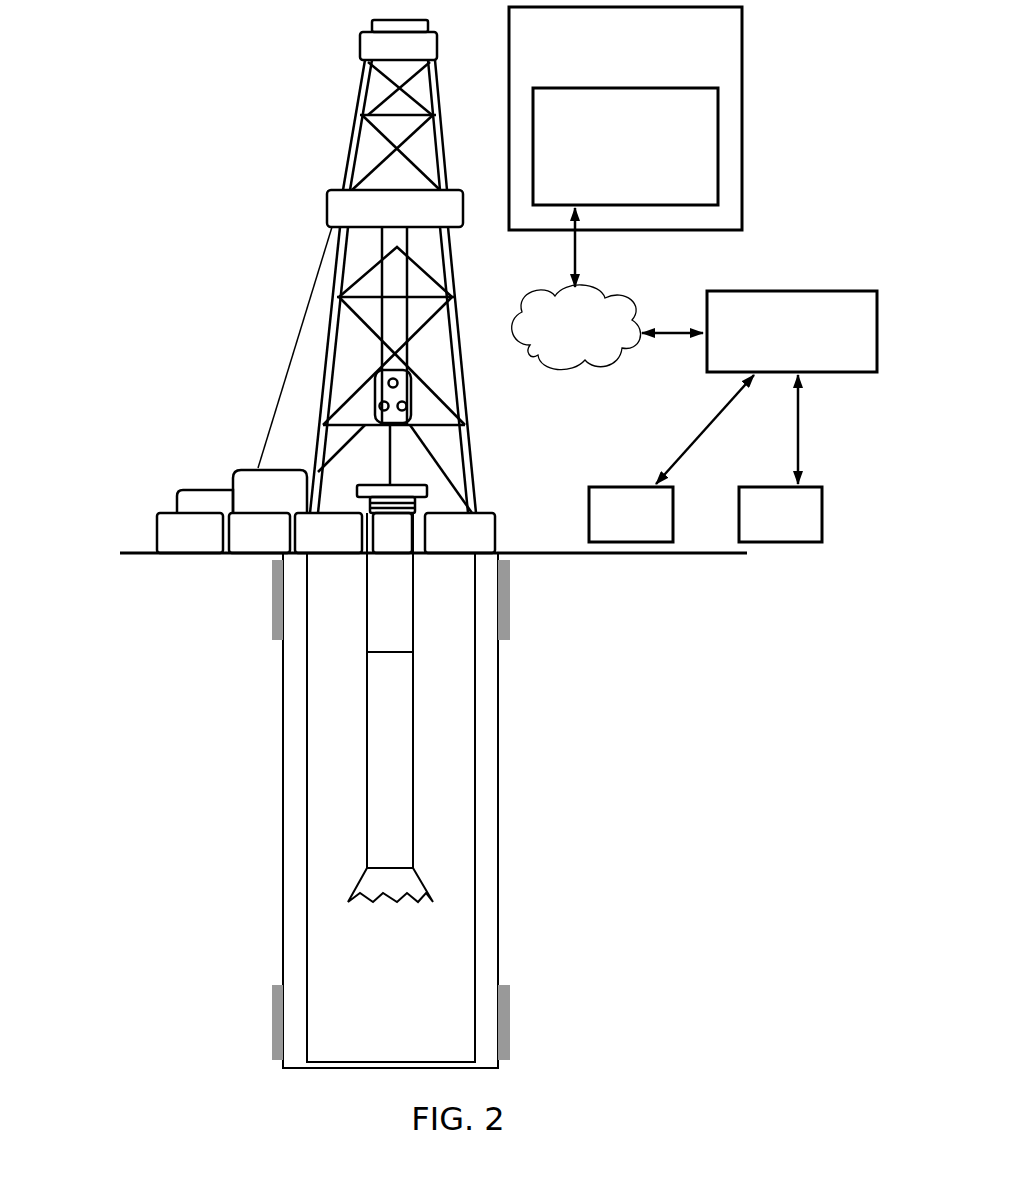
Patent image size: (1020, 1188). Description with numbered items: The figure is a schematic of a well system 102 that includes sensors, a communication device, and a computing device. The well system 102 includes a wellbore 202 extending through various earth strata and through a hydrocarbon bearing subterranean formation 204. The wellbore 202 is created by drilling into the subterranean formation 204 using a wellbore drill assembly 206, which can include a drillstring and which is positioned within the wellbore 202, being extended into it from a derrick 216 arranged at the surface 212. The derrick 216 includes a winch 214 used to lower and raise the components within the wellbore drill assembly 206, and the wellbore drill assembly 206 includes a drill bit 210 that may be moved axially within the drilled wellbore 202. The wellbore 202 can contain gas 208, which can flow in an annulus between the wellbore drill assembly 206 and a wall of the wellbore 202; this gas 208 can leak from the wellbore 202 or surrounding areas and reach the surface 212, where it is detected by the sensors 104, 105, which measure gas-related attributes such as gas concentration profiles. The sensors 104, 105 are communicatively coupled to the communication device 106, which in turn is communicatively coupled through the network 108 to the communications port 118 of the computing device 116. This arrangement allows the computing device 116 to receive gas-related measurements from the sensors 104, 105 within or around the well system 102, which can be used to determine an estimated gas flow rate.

The well system 102 is at (330, 187).
The sensor 104 is at (631, 514).
The sensor 105 is at (780, 514).
The communication device 106 is at (792, 331).
The network 108 is at (576, 327).
The computing device 116 is at (625, 118).
The communications port 118 is at (625, 146).
The wellbore 202 is at (481, 713).
The subterranean formation 204 is at (502, 647).
The wellbore drill assembly 206 is at (418, 666).
The gas 208 is at (457, 948).
The drill bit 210 is at (386, 905).
The surface 212 is at (131, 544).
The winch 214 is at (371, 389).
The derrick 216 is at (356, 474).